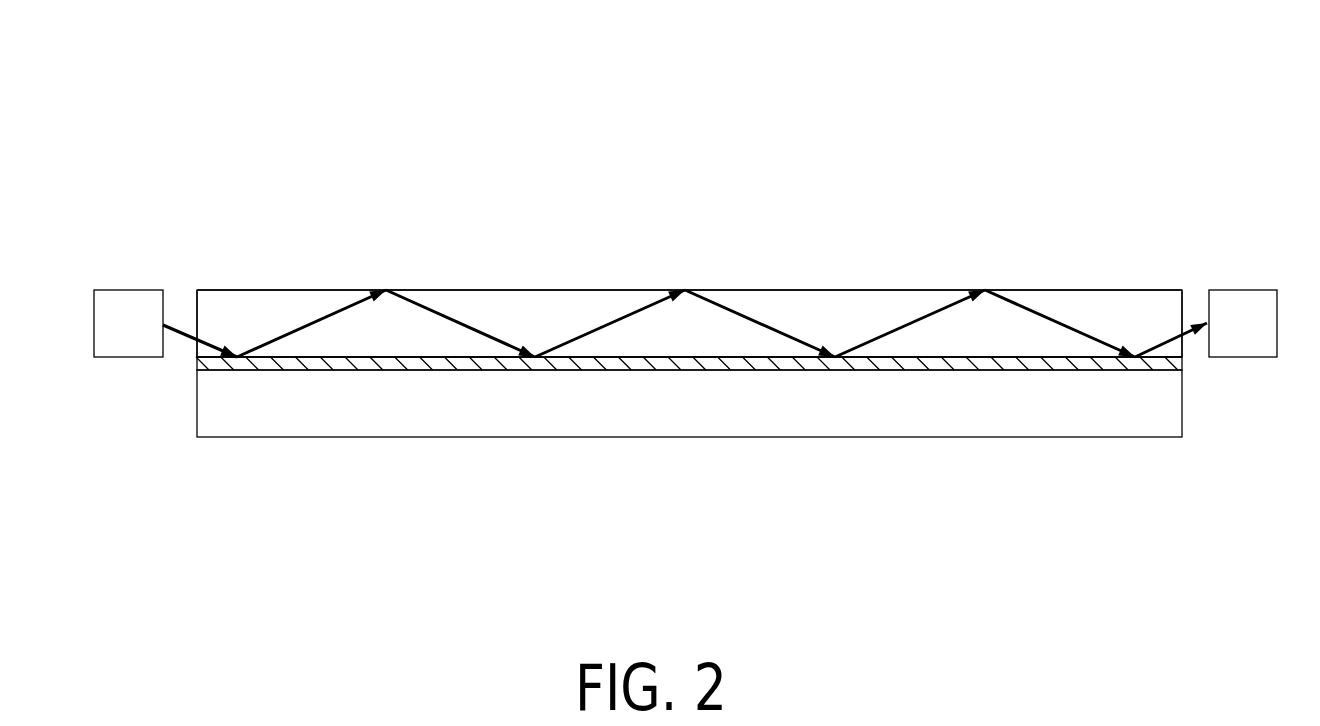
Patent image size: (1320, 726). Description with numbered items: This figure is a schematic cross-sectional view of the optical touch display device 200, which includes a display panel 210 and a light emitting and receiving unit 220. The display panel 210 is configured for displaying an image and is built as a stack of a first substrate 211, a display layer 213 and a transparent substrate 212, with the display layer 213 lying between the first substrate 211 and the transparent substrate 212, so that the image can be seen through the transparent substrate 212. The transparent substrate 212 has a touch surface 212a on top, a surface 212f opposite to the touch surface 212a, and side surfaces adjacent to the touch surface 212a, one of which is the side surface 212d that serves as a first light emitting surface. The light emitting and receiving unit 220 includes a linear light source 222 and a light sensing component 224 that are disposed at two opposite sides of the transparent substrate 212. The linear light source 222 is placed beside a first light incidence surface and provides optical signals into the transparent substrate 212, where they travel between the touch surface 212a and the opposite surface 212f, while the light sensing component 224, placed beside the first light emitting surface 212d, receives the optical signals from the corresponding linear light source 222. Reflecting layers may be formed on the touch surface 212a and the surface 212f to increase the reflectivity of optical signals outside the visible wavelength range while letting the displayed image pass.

The optical touch display device 200 is at (1310, 582).
The display panel 210 is at (1105, 483).
The first substrate 211 is at (933, 418).
The transparent substrate 212 is at (1002, 348).
The touch surface 212a is at (366, 290).
The side surface 212d is at (196, 315).
The surface opposite to the touch surface 212f is at (443, 357).
The display layer 213 is at (1065, 363).
The light emitting and receiving unit 220 is at (833, 62).
The linear light source 222 is at (132, 310).
The light sensing component 224 is at (1247, 310).